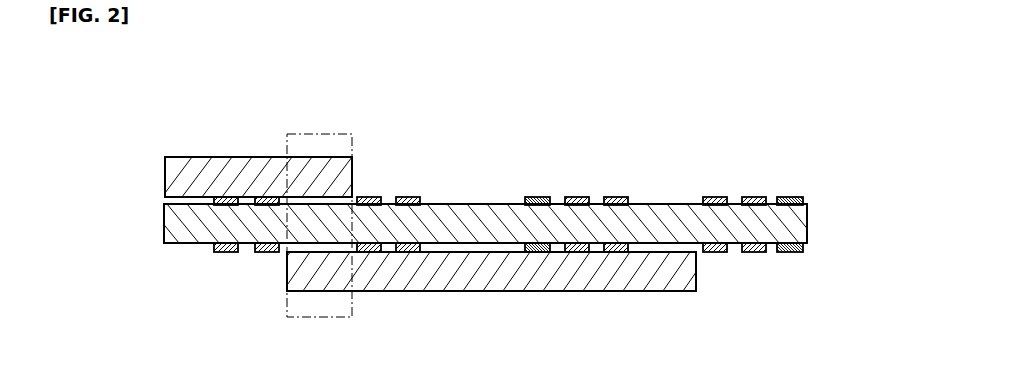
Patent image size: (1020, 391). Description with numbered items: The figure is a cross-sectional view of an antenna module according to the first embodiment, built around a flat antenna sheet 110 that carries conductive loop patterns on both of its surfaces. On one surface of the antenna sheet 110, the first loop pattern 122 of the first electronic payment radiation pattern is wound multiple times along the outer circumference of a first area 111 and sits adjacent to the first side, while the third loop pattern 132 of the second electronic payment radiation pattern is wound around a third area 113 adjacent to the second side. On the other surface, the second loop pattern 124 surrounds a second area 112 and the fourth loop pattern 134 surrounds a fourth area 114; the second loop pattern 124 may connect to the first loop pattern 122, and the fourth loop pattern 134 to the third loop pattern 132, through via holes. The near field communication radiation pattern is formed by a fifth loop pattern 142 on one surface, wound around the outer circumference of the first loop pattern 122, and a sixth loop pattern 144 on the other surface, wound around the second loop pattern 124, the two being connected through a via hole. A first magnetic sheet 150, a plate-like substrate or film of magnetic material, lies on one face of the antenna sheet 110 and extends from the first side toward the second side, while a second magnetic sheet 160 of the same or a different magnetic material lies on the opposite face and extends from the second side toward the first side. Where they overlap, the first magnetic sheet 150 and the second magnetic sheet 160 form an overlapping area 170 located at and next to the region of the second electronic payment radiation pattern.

The antenna sheet 110 is at (164, 224).
The first area 111 is at (670, 204).
The second area 112 is at (668, 244).
The third area 113 is at (329, 195).
The fourth area 114 is at (318, 245).
The first loop pattern 122 is at (616, 197).
The second loop pattern 124 is at (616, 252).
The third loop pattern 132 is at (272, 197).
The fourth loop pattern 134 is at (268, 252).
The fifth loop pattern 142 is at (534, 197).
The sixth loop pattern 144 is at (537, 252).
The first magnetic sheet 150 is at (165, 176).
The second magnetic sheet 160 is at (508, 291).
The overlapping area 170 is at (318, 134).